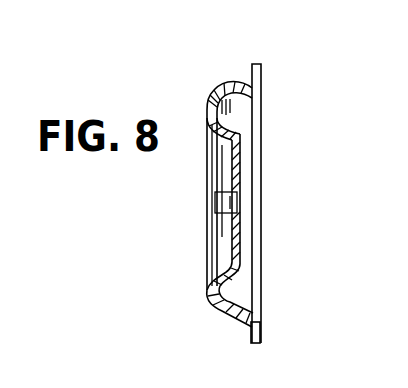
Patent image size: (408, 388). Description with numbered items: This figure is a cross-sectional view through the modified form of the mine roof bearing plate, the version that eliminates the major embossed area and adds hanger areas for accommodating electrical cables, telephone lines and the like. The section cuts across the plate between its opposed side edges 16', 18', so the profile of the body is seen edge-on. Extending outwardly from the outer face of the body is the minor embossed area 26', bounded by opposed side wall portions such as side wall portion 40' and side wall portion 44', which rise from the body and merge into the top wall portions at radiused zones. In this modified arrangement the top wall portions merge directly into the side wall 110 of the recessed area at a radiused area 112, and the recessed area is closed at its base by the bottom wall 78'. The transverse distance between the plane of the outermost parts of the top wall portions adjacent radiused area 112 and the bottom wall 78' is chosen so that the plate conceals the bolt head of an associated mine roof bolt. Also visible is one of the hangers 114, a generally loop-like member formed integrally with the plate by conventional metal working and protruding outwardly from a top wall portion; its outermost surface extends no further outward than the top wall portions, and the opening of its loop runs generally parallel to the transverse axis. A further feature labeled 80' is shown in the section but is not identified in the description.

The side edge 18' is at (290, 181).
The side edge 16' is at (244, 354).
The side wall portion 44' is at (210, 67).
The minor embossed area 26' is at (204, 96).
The bottom wall 78' is at (283, 198).
The lower wall portion 80' is at (270, 240).
The side wall portion 40' is at (211, 315).
The side wall 110 is at (208, 168).
The radiused area 112 is at (212, 261).
The hanger 114 is at (215, 213).